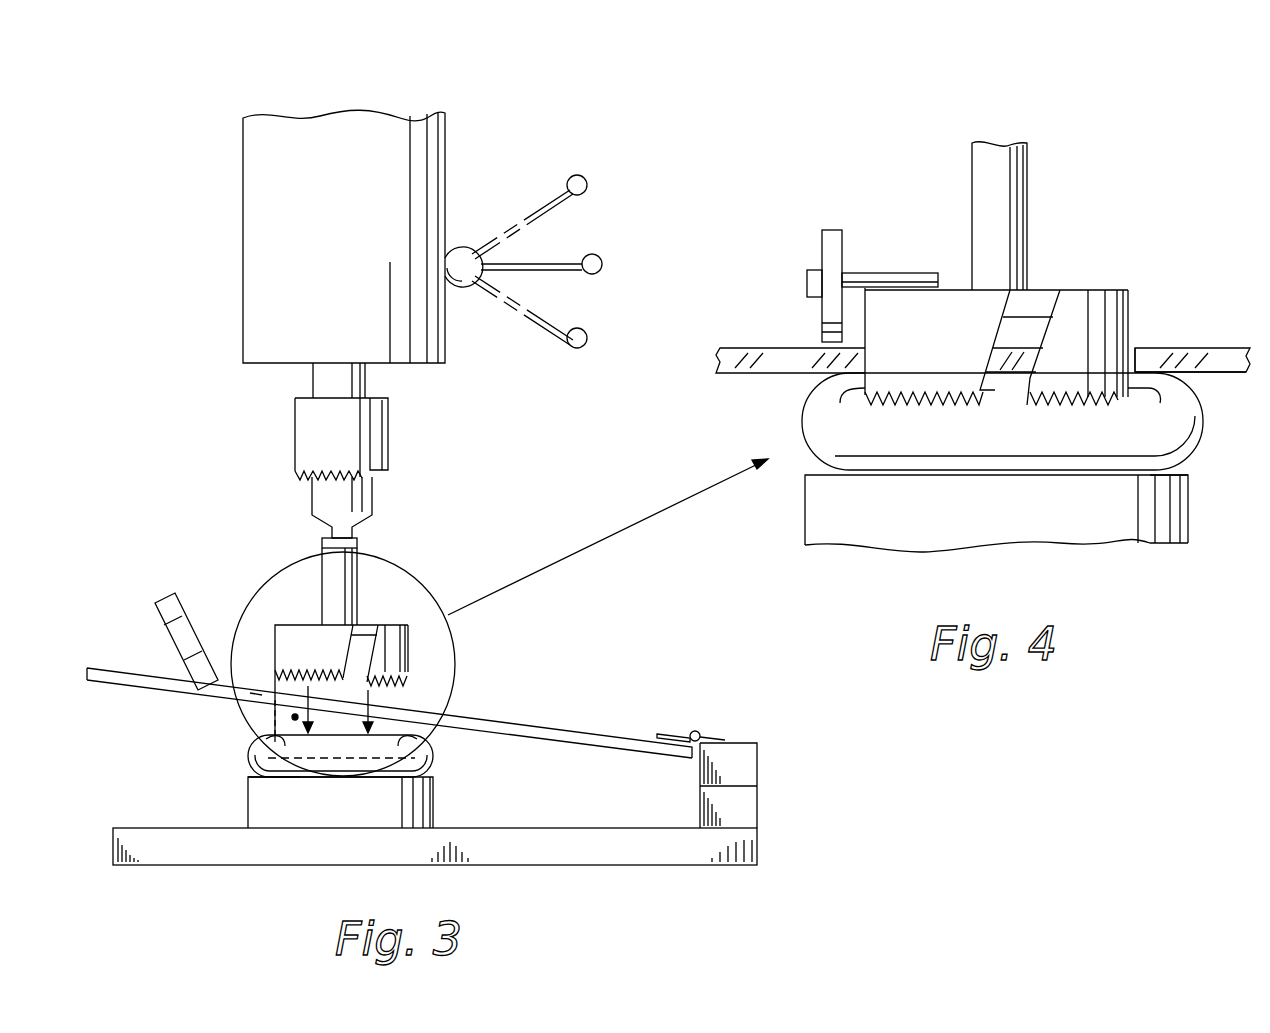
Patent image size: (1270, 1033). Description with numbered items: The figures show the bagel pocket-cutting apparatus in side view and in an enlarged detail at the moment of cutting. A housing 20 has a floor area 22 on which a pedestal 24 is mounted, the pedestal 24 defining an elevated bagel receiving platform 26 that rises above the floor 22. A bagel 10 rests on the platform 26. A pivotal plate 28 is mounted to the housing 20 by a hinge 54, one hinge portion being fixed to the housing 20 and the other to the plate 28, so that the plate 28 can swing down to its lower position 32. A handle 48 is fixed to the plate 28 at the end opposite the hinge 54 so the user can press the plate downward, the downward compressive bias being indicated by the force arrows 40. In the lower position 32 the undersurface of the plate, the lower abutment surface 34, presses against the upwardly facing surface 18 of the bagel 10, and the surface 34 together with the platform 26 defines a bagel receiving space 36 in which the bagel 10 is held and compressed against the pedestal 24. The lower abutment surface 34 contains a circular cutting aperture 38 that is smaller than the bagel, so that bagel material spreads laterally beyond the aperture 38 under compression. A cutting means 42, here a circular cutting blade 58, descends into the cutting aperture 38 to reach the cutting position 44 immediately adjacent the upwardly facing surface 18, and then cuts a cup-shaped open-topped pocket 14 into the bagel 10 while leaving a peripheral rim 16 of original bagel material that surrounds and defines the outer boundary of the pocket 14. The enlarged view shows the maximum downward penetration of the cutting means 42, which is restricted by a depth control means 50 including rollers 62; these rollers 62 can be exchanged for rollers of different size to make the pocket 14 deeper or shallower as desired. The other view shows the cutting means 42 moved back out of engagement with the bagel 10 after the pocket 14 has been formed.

In FIG. 3, the bagel 10 is at (438, 772).
In FIG. 4, the bagel 10 is at (1017, 436).
In FIG. 3, the open-topped pocket 14 is at (384, 752).
In FIG. 3, the rim 16 is at (266, 735).
In FIG. 4, the rim 16 is at (1000, 415).
In FIG. 3, the upwardly facing surface 18 is at (252, 742).
In FIG. 4, the upwardly facing surface 18 is at (1160, 348).
In FIG. 3, the housing 20 is at (758, 812).
In FIG. 3, the floor area 22 is at (134, 826).
In FIG. 3, the pedestal 24 is at (340, 815).
In FIG. 4, the pedestal 24 is at (1010, 516).
In FIG. 3, the elevated bagel receiving platform 26 is at (247, 780).
In FIG. 4, the elevated bagel receiving platform 26 is at (1192, 470).
In FIG. 3, the pivotal plate 28 is at (102, 666).
In FIG. 4, the pivotal plate 28 is at (760, 346).
In FIG. 3, the lower position 32 is at (92, 683).
In FIG. 4, the lower position 32 is at (1236, 375).
In FIG. 3, the lower abutment surface 34 is at (257, 692).
In FIG. 3, the bagel receiving space 36 is at (295, 720).
In FIG. 4, the cutting aperture 38 is at (1138, 350).
In FIG. 3, the downward force arrow 40 is at (302, 670).
In FIG. 4, the downward force arrow 40 is at (991, 398).
In FIG. 3, the cutting means 42 is at (388, 622).
In FIG. 4, the cutting means 42 is at (942, 286).
In FIG. 4, the cutting position 44 is at (1086, 288).
In FIG. 3, the handle 48 is at (168, 595).
In FIG. 4, the depth control means 50 is at (878, 272).
In FIG. 3, the hinge 54 is at (696, 730).
In FIG. 3, the circular cutting blade 58 is at (398, 692).
In FIG. 4, the rollers 62 is at (830, 228).